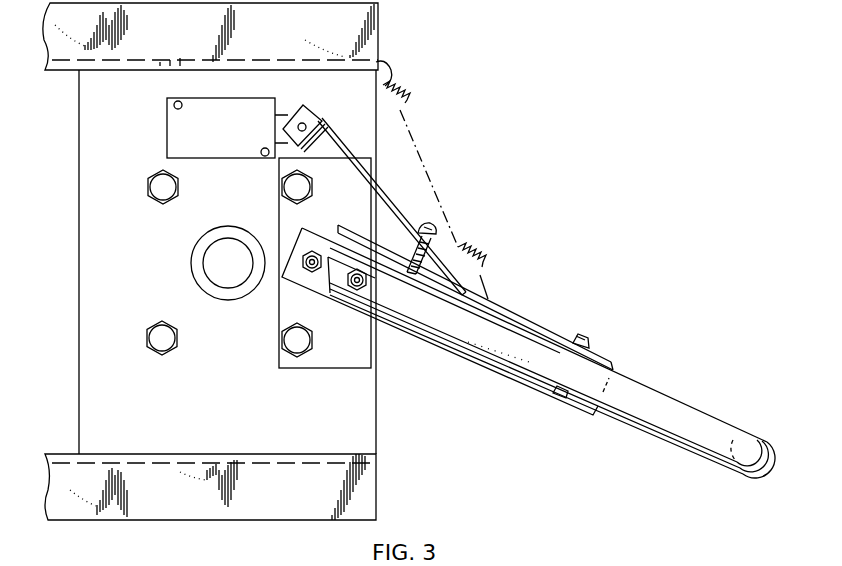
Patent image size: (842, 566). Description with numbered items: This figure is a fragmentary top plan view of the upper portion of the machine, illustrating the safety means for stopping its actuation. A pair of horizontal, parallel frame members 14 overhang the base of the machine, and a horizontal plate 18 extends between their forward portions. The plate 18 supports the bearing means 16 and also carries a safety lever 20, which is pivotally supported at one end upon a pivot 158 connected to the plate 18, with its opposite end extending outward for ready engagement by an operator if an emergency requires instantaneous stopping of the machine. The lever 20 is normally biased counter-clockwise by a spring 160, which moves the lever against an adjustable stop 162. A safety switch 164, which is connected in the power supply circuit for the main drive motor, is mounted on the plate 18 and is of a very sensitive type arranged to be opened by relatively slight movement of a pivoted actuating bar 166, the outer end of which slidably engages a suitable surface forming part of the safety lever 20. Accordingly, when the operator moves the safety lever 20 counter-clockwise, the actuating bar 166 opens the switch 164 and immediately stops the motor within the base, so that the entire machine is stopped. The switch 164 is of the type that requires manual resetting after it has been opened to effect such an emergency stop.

The horizontal frame members 14 is at (376, 35).
The bearing means 16 is at (220, 295).
The horizontal plate 18 is at (85, 248).
The safety lever 20 is at (653, 388).
The pivot 158 is at (313, 272).
The spring 160 is at (480, 253).
The adjustable stop 162 is at (413, 275).
The safety switch 164 is at (175, 117).
The actuating bar 166 is at (392, 212).